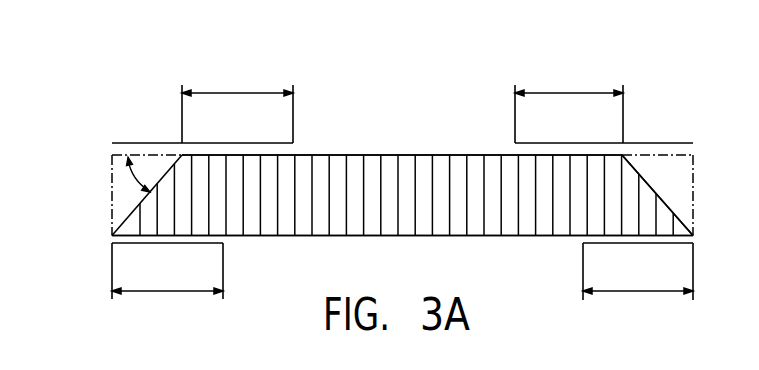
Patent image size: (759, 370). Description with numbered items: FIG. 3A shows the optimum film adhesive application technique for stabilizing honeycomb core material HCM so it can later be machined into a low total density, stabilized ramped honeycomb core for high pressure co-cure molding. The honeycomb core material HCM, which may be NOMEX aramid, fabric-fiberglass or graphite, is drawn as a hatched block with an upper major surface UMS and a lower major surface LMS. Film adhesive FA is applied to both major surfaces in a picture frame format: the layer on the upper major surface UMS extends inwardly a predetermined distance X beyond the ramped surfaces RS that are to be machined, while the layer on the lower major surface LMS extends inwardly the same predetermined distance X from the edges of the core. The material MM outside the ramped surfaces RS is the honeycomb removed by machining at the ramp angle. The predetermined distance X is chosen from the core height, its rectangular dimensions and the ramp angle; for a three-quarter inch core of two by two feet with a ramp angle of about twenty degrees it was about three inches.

The honeycomb material removed by machining MM is at (159, 150).
The film adhesive FA is at (222, 143).
The predetermined distance X is at (252, 92).
The honeycomb core material HCM is at (370, 166).
The upper major surface UMS is at (418, 157).
The lower major surface LMS is at (405, 236).
The ramped surface RS is at (662, 192).